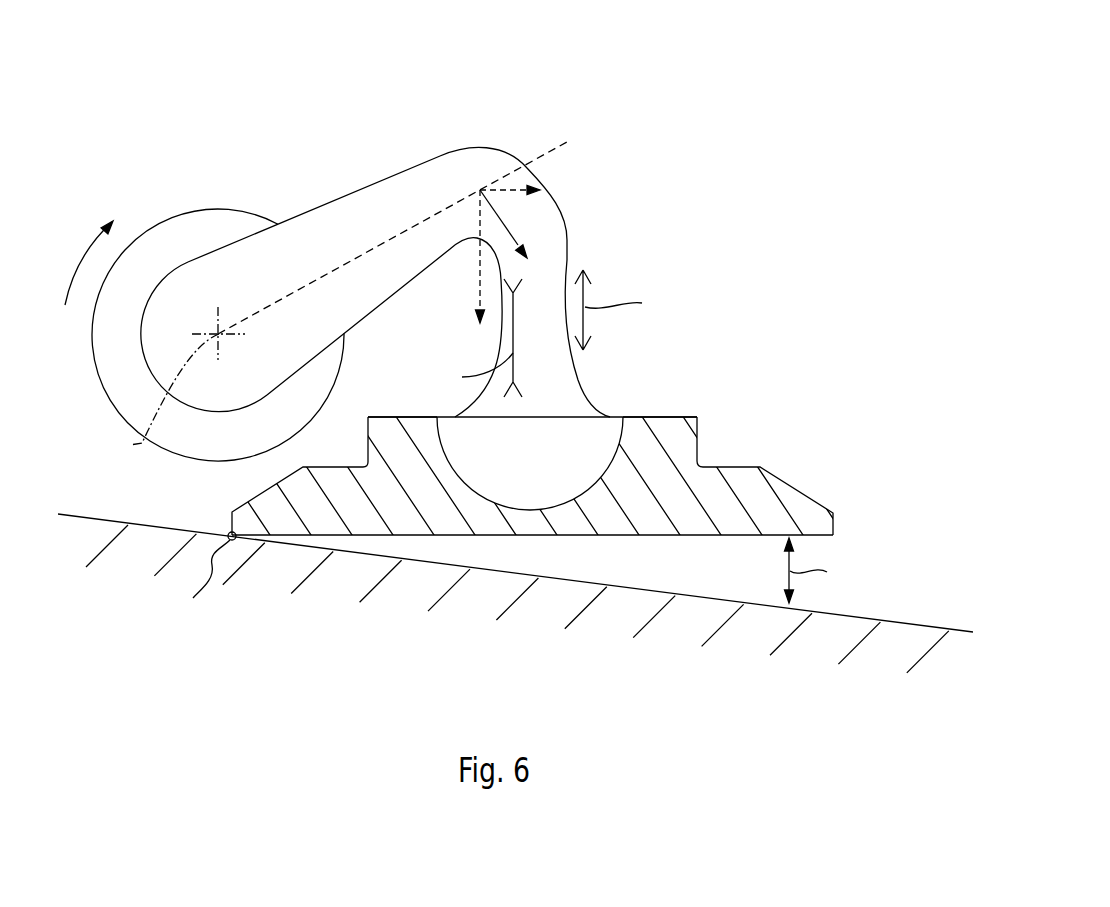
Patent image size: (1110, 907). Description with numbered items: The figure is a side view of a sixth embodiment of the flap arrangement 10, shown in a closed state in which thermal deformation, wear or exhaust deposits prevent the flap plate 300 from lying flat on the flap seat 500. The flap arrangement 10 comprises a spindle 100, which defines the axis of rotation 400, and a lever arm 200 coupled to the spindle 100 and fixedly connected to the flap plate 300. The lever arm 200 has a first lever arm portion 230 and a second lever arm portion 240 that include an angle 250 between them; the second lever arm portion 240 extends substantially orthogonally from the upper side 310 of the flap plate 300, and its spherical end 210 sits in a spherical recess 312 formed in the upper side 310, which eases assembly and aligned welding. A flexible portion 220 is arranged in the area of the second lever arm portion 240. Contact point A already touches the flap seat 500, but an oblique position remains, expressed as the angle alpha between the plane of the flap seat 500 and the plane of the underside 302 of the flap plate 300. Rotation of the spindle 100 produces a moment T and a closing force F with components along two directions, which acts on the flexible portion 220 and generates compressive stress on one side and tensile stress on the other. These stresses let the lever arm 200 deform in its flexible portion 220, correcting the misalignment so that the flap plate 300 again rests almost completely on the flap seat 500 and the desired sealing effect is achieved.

The flap arrangement 10 is at (805, 150).
The spindle 100 is at (202, 225).
The lever arm 200 is at (466, 342).
The end of the second lever arm portion 210 is at (557, 495).
The flexible portion 220 is at (630, 374).
The first lever arm portion 230 is at (362, 198).
The second lever arm portion 240 is at (560, 247).
The angle 250 is at (486, 287).
The flap plate 300 is at (496, 485).
The underside of the flap plate 302 is at (653, 538).
The upper side of the flap plate 310 is at (665, 416).
The spherical recess 312 is at (512, 498).
The axis of rotation 400 is at (152, 398).
The flap seat 500 is at (903, 621).